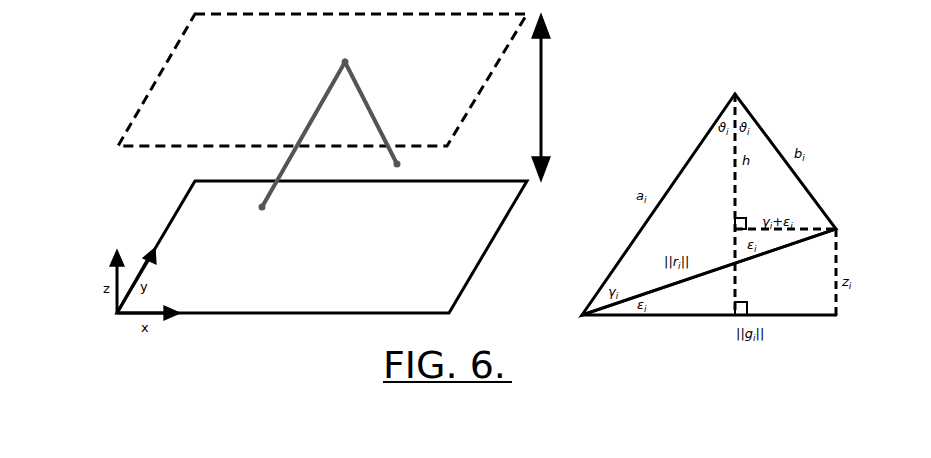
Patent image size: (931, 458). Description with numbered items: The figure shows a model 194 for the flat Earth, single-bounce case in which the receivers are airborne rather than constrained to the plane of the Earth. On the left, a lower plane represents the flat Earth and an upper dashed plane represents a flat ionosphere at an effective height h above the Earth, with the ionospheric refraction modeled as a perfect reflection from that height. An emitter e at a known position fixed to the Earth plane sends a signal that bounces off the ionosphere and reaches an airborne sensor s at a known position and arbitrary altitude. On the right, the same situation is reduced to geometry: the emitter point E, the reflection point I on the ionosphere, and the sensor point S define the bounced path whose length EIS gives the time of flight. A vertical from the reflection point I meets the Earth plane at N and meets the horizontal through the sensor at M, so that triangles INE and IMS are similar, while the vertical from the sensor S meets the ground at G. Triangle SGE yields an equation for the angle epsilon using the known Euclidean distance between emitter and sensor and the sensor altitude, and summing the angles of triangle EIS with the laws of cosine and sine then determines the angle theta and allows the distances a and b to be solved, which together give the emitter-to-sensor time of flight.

The model 194 is at (124, 80).
The emitter e is at (254, 207).
The airborne sensor s is at (406, 164).
The height of the flat ionosphere h is at (545, 97).
The emitter point E is at (576, 316).
The ionosphere reflection point I is at (734, 85).
The sensor point S is at (843, 228).
The ground point below sensor G is at (843, 316).
The foot of perpendicular from sensor M is at (730, 224).
The ground point below reflection point N is at (731, 307).